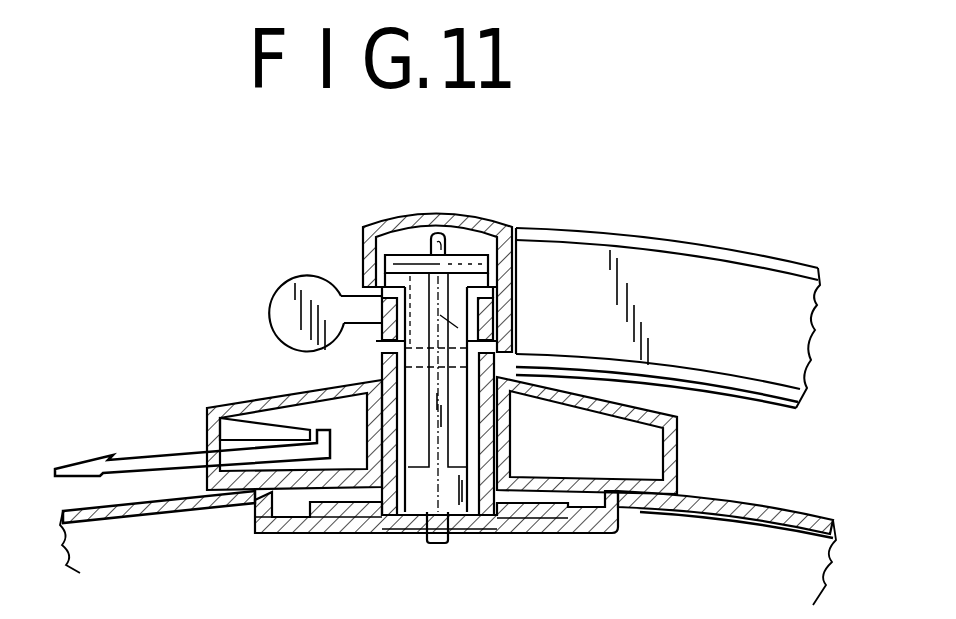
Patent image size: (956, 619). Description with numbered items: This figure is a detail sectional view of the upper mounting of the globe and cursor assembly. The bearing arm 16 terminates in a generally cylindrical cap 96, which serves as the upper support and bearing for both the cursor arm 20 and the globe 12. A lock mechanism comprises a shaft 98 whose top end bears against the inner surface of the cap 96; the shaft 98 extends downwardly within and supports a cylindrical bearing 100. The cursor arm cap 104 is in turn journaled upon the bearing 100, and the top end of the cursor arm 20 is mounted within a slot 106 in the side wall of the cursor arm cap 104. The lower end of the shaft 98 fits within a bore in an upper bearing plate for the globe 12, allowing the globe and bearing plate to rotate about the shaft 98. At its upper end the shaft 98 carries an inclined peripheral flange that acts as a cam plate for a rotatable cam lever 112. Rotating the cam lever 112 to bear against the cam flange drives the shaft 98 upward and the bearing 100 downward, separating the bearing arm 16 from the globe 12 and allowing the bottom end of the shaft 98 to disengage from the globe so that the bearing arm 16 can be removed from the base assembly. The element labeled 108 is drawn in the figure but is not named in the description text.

The cylindrical cap 96 is at (470, 213).
The bearing arm 16 is at (650, 277).
The cursor arm cap 104 is at (247, 407).
The base 108 is at (620, 522).
The globe 12 is at (730, 510).
The cursor arm 20 is at (75, 460).
The slot 106 is at (192, 438).
The cam lever 112 is at (287, 313).
The cylindrical bearing 100 is at (380, 275).
The shaft 98 is at (446, 440).